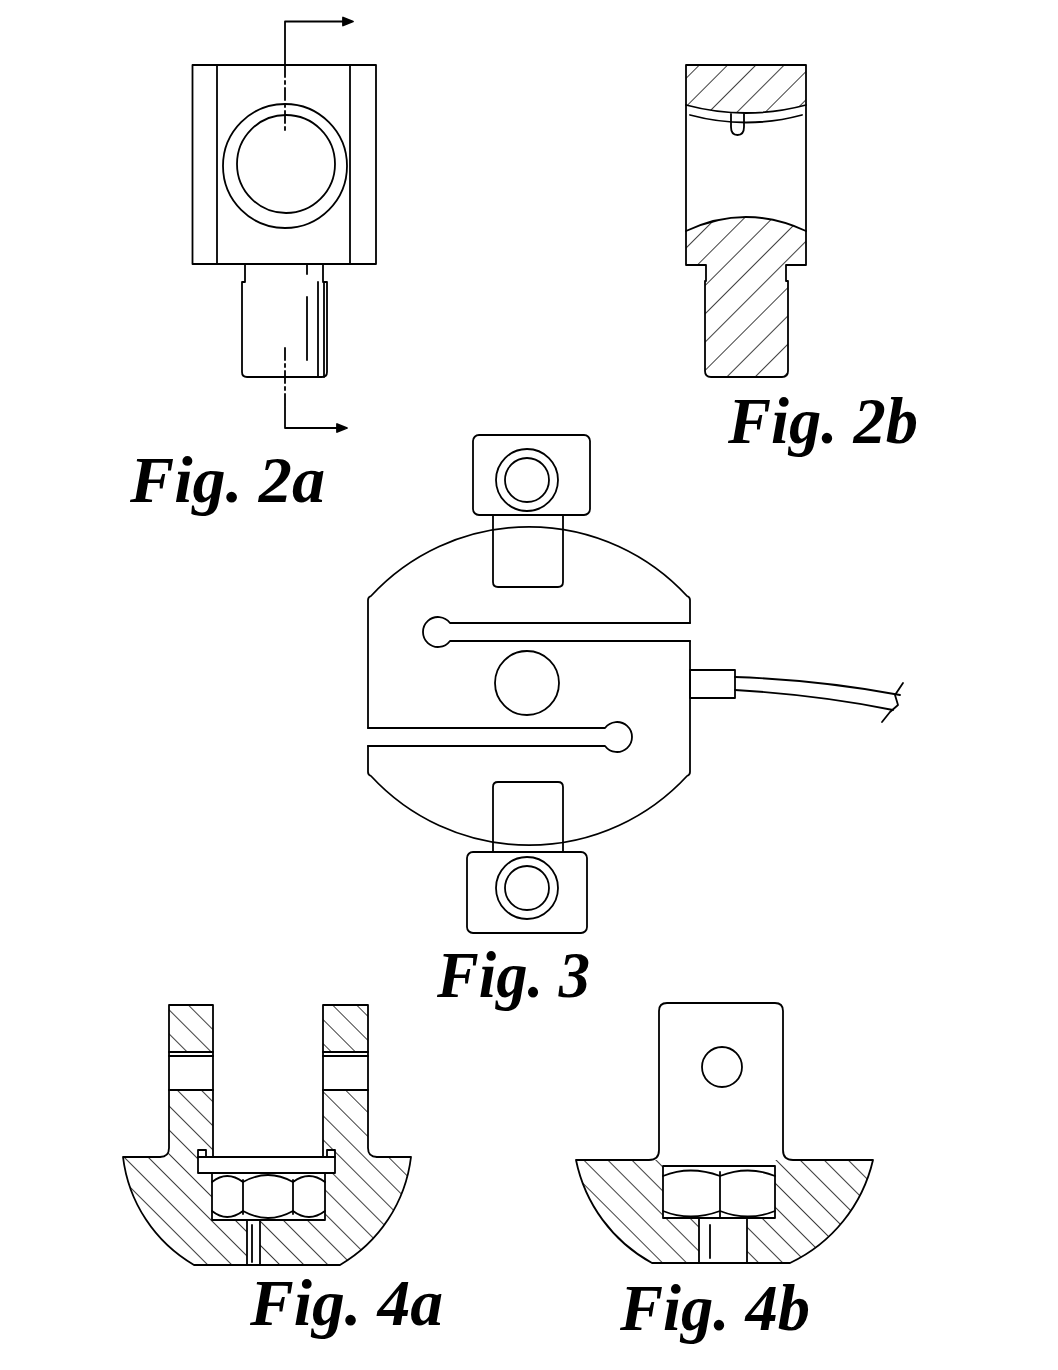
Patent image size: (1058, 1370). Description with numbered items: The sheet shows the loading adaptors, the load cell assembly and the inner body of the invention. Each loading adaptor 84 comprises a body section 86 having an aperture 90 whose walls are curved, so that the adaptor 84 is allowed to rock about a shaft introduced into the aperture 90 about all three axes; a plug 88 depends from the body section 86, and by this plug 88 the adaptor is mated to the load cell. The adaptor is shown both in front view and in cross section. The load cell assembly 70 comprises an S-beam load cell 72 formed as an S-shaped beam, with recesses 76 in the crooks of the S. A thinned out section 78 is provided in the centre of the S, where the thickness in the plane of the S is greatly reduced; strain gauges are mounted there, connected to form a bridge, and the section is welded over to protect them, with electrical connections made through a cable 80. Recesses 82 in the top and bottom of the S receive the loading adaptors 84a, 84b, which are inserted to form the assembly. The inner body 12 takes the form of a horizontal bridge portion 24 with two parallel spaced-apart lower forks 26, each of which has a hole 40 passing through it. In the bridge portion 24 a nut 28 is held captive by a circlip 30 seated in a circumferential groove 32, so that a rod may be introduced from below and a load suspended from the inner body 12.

In FIG. 4A, the inner body 12 is at (276, 1136).
In FIG. 4B, the inner body 12 is at (696, 1133).
In FIG. 4A, the bridge portion 24 is at (152, 1223).
In FIG. 4A, the lower forks 26 is at (213, 1038).
In FIG. 4A, the nut 28 is at (260, 1235).
In FIG. 4B, the nut 28 is at (719, 1214).
In FIG. 4A, the circlip 30 is at (242, 1165).
In FIG. 4A, the circumferential groove 32 is at (217, 1157).
In FIG. 4A, the hole 40 is at (180, 1067).
In FIG. 4B, the hole 40 is at (723, 1067).
In FIG. 3, the load cell assembly 70 is at (600, 684).
In FIG. 3, the S-beam load cell 72 is at (437, 828).
In FIG. 3, the recesses 76 is at (423, 643).
In FIG. 3, the thinned out section 78 is at (558, 666).
In FIG. 3, the cable 80 is at (833, 694).
In FIG. 3, the recesses 82 is at (565, 565).
In FIG. 2A, the loading adaptor 84 is at (278, 225).
In FIG. 2B, the loading adaptor 84 is at (800, 194).
In FIG. 3, the loading adaptor 84a is at (590, 476).
In FIG. 3, the loading adaptor 84b is at (587, 898).
In FIG. 2A, the body section 86 is at (270, 65).
In FIG. 2B, the body section 86 is at (800, 65).
In FIG. 2A, the plug 88 is at (328, 326).
In FIG. 2B, the plug 88 is at (788, 341).
In FIG. 2A, the aperture 90 is at (238, 160).
In FIG. 2B, the aperture 90 is at (745, 116).